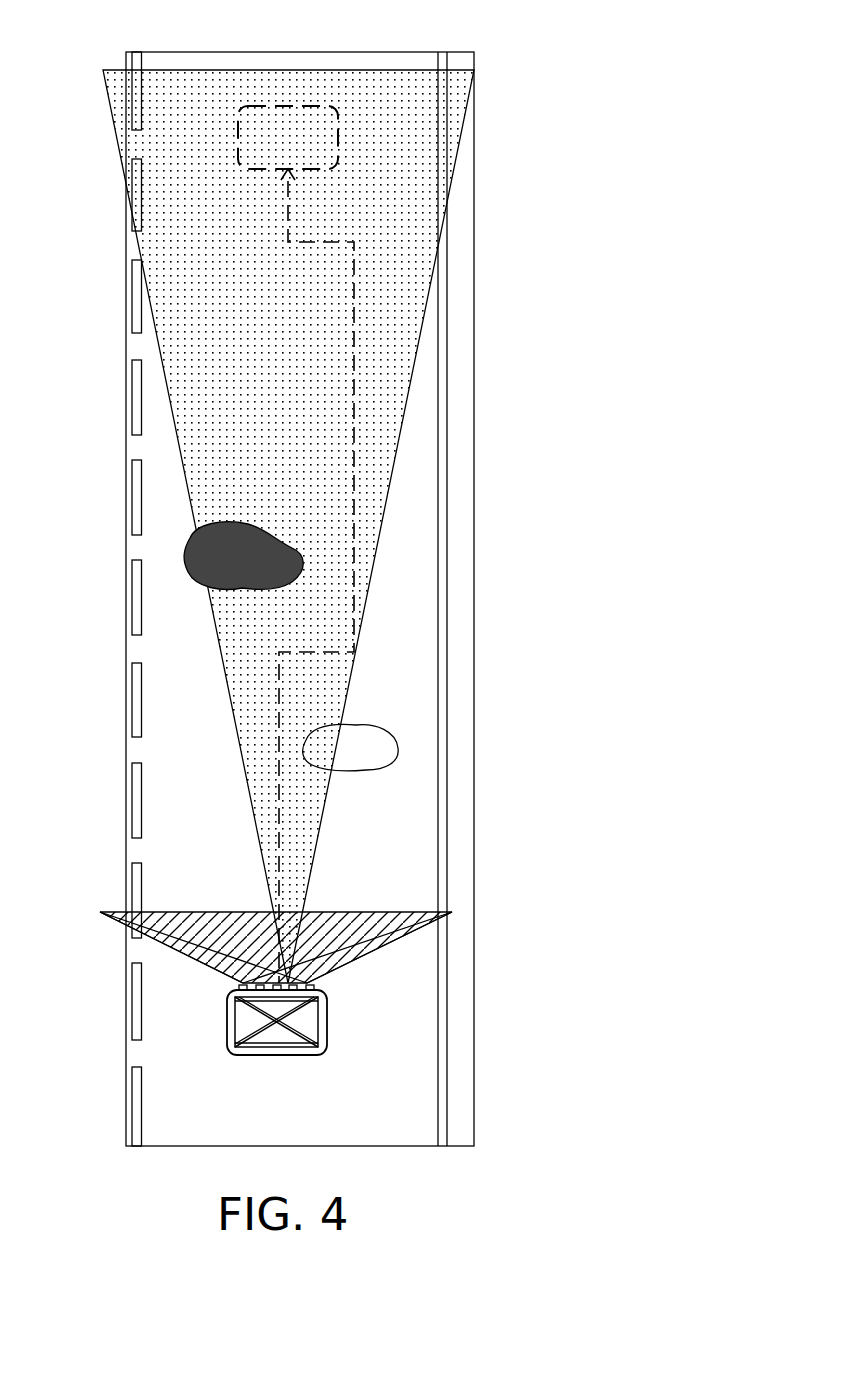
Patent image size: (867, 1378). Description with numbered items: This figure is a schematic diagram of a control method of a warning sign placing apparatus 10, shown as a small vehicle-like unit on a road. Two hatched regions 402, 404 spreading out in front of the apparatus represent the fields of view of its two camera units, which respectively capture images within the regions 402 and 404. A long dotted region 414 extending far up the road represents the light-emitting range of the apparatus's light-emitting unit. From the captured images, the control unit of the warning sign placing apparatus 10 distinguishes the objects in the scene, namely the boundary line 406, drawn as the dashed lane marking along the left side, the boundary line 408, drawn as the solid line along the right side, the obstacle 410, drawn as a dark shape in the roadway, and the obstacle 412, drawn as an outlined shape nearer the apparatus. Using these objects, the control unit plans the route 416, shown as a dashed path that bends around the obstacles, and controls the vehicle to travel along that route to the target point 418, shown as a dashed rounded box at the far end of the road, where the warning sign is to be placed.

The warning sign placing apparatus 10 is at (327, 1022).
The region 402 is at (152, 912).
The region 404 is at (415, 912).
The boundary line 406 is at (137, 700).
The boundary line 408 is at (444, 546).
The obstacle 410 is at (185, 542).
The obstacle 412 is at (385, 746).
The region 414 is at (180, 88).
The route 416 is at (354, 345).
The target point 418 is at (325, 130).